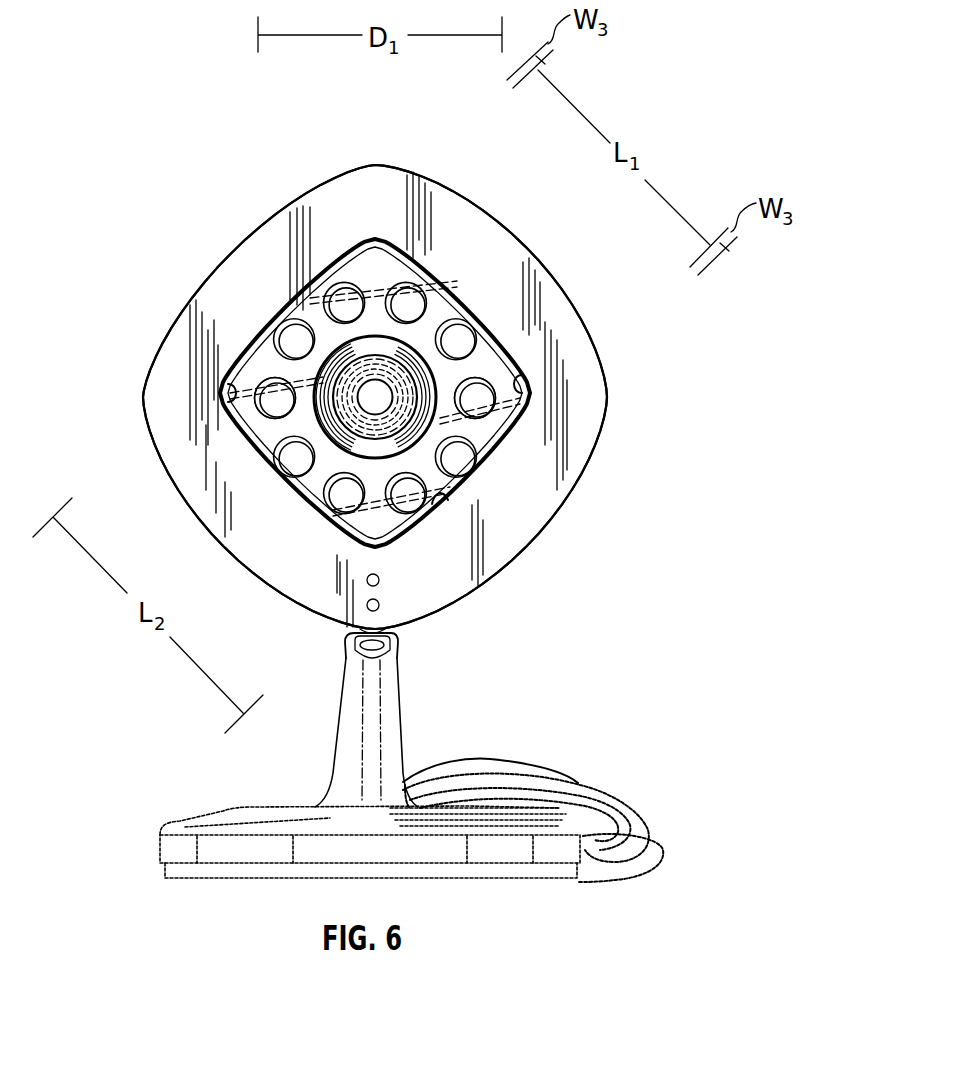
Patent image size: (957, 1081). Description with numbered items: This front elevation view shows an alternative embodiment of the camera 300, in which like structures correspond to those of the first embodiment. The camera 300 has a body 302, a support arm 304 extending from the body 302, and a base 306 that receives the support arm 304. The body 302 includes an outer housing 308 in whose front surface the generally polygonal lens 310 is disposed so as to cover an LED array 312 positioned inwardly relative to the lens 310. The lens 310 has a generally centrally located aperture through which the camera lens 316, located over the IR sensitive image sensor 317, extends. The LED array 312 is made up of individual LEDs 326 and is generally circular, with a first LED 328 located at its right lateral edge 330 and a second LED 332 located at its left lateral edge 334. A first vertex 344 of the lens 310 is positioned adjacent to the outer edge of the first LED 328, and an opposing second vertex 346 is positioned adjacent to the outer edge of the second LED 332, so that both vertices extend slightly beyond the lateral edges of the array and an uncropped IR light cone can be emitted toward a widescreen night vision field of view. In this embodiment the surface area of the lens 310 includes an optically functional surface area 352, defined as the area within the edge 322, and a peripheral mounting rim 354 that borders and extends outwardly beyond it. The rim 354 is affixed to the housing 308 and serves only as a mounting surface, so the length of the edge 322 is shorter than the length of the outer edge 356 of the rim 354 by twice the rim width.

The camera 300 is at (165, 130).
The body 302 is at (612, 406).
The support arm 304 is at (333, 772).
The base 306 is at (277, 823).
The outer housing 308 is at (317, 592).
The generally polygonal lens 310 is at (258, 336).
The LED array 312 is at (282, 312).
The camera lens 316 is at (406, 366).
The IR sensitive image sensor 317 is at (407, 393).
The edge 322 is at (442, 502).
The LEDs 326 is at (297, 325).
The first LED 328 is at (480, 400).
The right lateral edge 330 is at (478, 400).
The second LED 332 is at (275, 398).
The left lateral edge 334 is at (258, 405).
The first vertex 344 is at (520, 378).
The second vertex 346 is at (233, 385).
The optically functional surface area 352 is at (400, 528).
The peripheral mounting rim 354 is at (493, 462).
The outer edge 356 is at (420, 535).